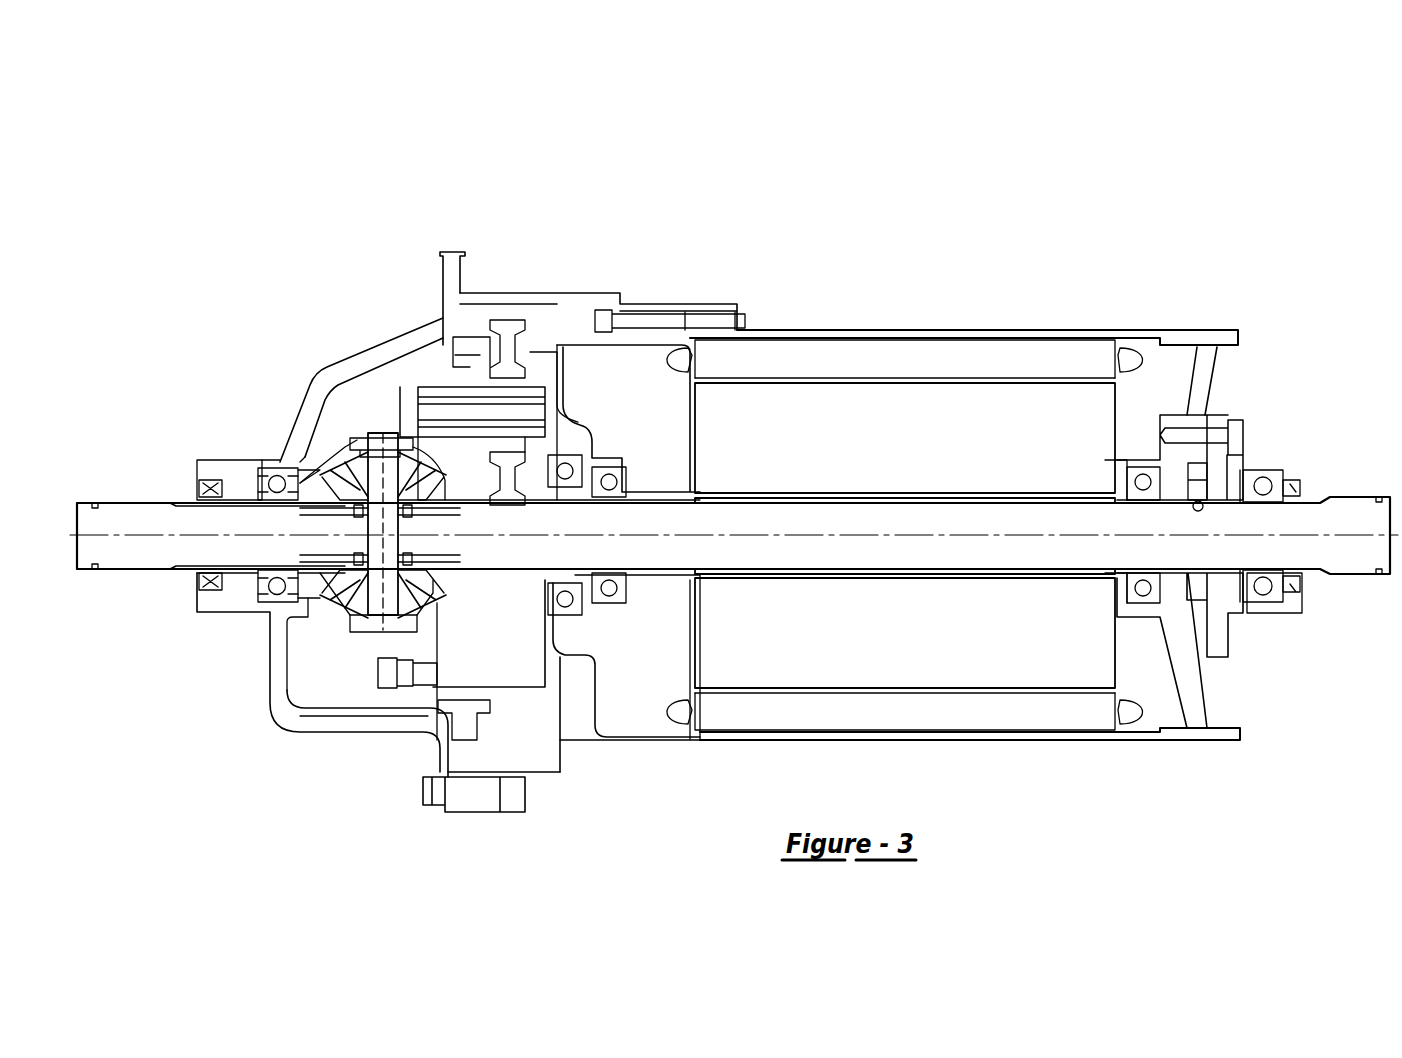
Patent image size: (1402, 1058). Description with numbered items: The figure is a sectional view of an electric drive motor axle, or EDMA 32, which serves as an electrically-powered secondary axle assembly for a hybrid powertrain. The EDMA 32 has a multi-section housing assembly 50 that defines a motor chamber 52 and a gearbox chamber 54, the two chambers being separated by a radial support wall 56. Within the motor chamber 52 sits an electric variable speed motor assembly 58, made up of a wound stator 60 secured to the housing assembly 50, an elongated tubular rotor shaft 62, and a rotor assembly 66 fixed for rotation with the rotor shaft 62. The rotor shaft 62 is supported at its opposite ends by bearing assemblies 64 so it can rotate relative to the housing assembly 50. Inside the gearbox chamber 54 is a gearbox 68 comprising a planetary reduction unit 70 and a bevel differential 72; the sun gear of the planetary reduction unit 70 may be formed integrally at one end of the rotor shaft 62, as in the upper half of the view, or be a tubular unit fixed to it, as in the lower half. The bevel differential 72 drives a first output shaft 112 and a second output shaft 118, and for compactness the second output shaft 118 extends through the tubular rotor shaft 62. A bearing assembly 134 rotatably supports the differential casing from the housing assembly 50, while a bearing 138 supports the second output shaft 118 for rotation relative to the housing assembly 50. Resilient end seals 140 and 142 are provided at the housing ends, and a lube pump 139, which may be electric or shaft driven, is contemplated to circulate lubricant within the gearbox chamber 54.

The EDMA 32 is at (948, 210).
The multi-section housing assembly 50 is at (1212, 330).
The motor chamber 52 is at (622, 700).
The gearbox chamber 54 is at (353, 687).
The radial support wall 56 is at (580, 650).
The electric variable speed motor assembly 58 is at (975, 357).
The wound stator 60 is at (858, 357).
The elongated tubular rotor shaft 62 is at (762, 500).
The bearing assemblies 64 is at (607, 482).
The rotor assembly 66 is at (1022, 650).
The gearbox 68 is at (372, 422).
The planetary reduction unit 70 is at (532, 360).
The bevel differential 72 is at (352, 613).
The first output shaft 112 is at (138, 552).
The second output shaft 118 is at (1342, 512).
The bearing assembly 134 is at (270, 470).
The bearing 138 is at (1250, 618).
The lube pump 139 is at (1197, 492).
The resilient end seal 140 is at (195, 488).
The resilient end seal 142 is at (1308, 478).